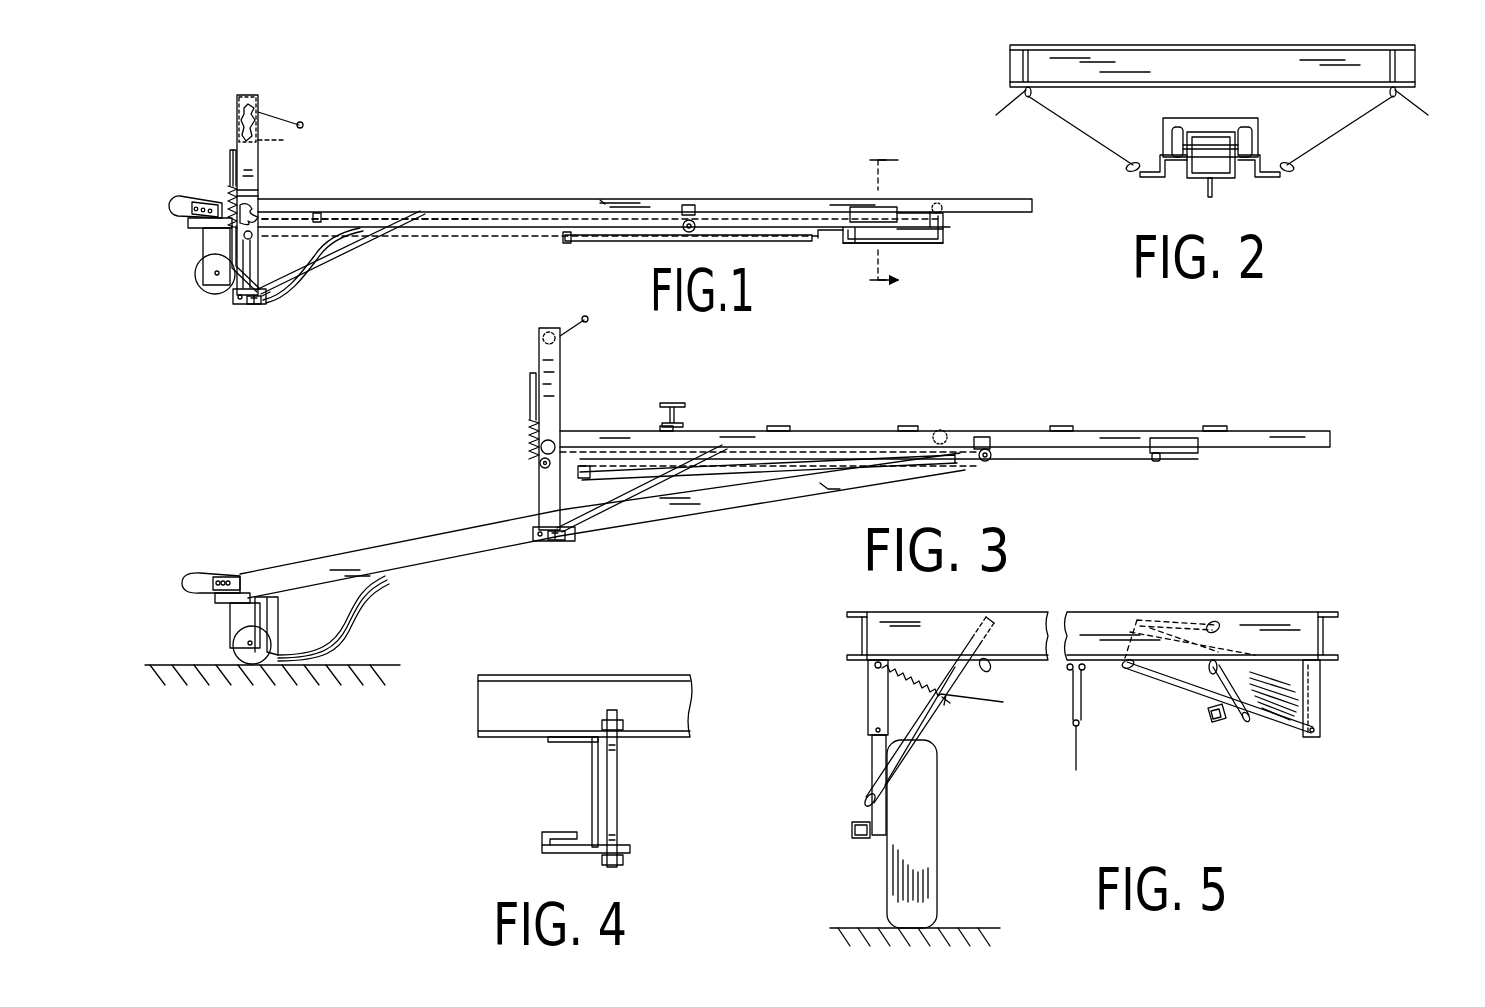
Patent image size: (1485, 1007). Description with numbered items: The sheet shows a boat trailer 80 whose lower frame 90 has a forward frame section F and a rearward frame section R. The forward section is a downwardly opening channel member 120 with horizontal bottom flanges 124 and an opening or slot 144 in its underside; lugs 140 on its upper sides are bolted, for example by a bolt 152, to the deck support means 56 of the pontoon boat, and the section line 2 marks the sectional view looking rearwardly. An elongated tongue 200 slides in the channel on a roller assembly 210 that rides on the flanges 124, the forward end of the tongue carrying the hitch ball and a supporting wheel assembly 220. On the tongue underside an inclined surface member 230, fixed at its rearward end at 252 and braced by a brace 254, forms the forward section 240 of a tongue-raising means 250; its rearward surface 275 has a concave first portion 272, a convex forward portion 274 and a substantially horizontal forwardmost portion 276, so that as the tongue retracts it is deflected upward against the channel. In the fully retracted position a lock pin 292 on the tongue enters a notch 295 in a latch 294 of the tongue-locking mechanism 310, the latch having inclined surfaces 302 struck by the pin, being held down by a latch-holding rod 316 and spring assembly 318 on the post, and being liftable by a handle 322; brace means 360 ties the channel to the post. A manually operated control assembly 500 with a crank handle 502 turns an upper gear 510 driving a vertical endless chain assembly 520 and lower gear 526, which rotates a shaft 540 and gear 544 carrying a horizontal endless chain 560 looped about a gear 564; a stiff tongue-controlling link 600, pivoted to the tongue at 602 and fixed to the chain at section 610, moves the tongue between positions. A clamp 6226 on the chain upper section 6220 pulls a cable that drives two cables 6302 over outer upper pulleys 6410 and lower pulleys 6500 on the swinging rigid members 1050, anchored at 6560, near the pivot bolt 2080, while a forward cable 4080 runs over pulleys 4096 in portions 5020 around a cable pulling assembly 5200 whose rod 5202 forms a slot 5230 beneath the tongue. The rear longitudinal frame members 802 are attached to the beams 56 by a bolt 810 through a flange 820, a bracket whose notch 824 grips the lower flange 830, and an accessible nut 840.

In FIG. 3, the deck support means 56 is at (675, 402).
In FIG. 4, the deck support means 56 is at (692, 706).
In FIG. 1, the trailer 80 is at (462, 160).
In FIG. 5, the trailer 80 is at (1250, 611).
In FIG. 3, the lower frame 90 is at (1005, 429).
In FIG. 1, the channel member 120 is at (440, 198).
In FIG. 2, the channel member 120 is at (1268, 126).
In FIG. 3, the channel member 120 is at (955, 429).
In FIG. 2, the horizontal bottom flanges 124 is at (1242, 168).
In FIG. 3, the lugs 140 is at (660, 429).
In FIG. 2, the opening or slot 144 is at (1187, 170).
In FIG. 3, the bolt 152 is at (662, 424).
In FIG. 1, the tongue 200 is at (305, 213).
In FIG. 2, the tongue 200 is at (1226, 178).
In FIG. 3, the tongue 200 is at (516, 519).
In FIG. 2, the roller assembly / trailer hitch 210 is at (1255, 138).
In FIG. 3, the roller assembly / trailer hitch 210 is at (195, 573).
In FIG. 3, the supporting wheel assembly 220 is at (232, 629).
In FIG. 3, the inclined surface member 230 is at (352, 622).
In FIG. 1, the forward section / rigid guides 240 is at (290, 262).
In FIG. 3, the forward section / rigid guides 240 is at (342, 640).
In FIG. 3, the tongue-raising means 250 is at (392, 580).
In FIG. 3, the upper rearward end fixing point 252 is at (388, 574).
In FIG. 1, the brace 254 is at (245, 253).
In FIG. 3, the brace 254 is at (285, 601).
In FIG. 3, the first portion of rearward surface 272 is at (390, 590).
In FIG. 3, the forward portion of rearward surface 274 is at (322, 650).
In FIG. 3, the rearward surface 275 is at (354, 616).
In FIG. 3, the forwardmost portion 276 is at (290, 667).
In FIG. 1, the lock pin 292 is at (247, 305).
In FIG. 3, the lock pin 292 is at (556, 541).
In FIG. 1, the latch 294 is at (236, 299).
In FIG. 3, the latch 294 is at (575, 531).
In FIG. 1, the notch 295 is at (258, 306).
In FIG. 3, the notch 295 is at (560, 541).
In FIG. 1, the inclined surfaces 302 is at (270, 298).
In FIG. 3, the tongue-locking mechanism 310 is at (545, 548).
In FIG. 1, the latch-holding rod 316 is at (231, 163).
In FIG. 3, the latch-holding rod 316 is at (530, 391).
In FIG. 1, the spring assembly 318 is at (228, 193).
In FIG. 1, the handle 322 is at (232, 152).
In FIG. 1, the brace means 360 is at (350, 238).
In FIG. 1, the manually operated control assembly 500 is at (272, 107).
In FIG. 1, the crank handle 502 is at (302, 122).
In FIG. 3, the crank handle 502 is at (566, 333).
In FIG. 1, the upper gear 510 is at (254, 100).
In FIG. 1, the vertical endless chain assembly 520 is at (290, 138).
In FIG. 1, the lower gear 526 is at (261, 198).
In FIG. 1, the shaft 540 is at (232, 230).
In FIG. 3, the gear 544 is at (528, 446).
In FIG. 1, the endless chain 560 is at (580, 239).
In FIG. 3, the endless chain 560 is at (735, 430).
In FIG. 3, the gear 564 is at (992, 460).
In FIG. 3, the tongue-controlling link 600 is at (765, 490).
In FIG. 3, the pivotal attachment means 602 is at (830, 486).
In FIG. 3, the chain section 610 is at (580, 468).
In FIG. 4, the longitudinal frame members 802 is at (592, 778).
In FIG. 4, the bolt 810 is at (618, 759).
In FIG. 4, the flange / bracket 820 is at (520, 735).
In FIG. 4, the notch 824 is at (542, 848).
In FIG. 4, the lower flange 830 is at (600, 835).
In FIG. 4, the nut 840 is at (621, 861).
In FIG. 5, the swinging rigid members 1050 is at (870, 758).
In FIG. 5, the bolt 2080 is at (887, 811).
In FIG. 1, the forward cable 4080 is at (845, 240).
In FIG. 3, the forward cable 4080 is at (1198, 450).
In FIG. 1, the pulleys 4096 is at (862, 207).
In FIG. 3, the pulleys 4096 is at (1162, 461).
In FIG. 1, the cable portions 5020 is at (965, 230).
In FIG. 3, the cable portions 5020 is at (1098, 460).
In FIG. 1, the cable pulling assembly 5200 is at (938, 246).
In FIG. 1, the rod 5202 is at (858, 244).
In FIG. 1, the slot 5230 is at (915, 235).
In FIG. 1, the upper section of endless chain 6220 is at (482, 219).
In FIG. 1, the clamp 6226 is at (323, 215).
In FIG. 5, the cables 6302 is at (942, 738).
In FIG. 5, the outer upper pulleys 6410 is at (990, 666).
In FIG. 5, the lower pulleys 6500 is at (900, 791).
In FIG. 5, the anchor means 6560 is at (948, 665).
In FIG. 1, the forward frame section F is at (602, 198).
In FIG. 2, the forward frame section F is at (1160, 128).
In FIG. 3, the forward frame section F is at (808, 429).
In FIG. 5, the rearward frame section R is at (1078, 611).
In FIG. 1, the section line 2— 2 is at (894, 217).